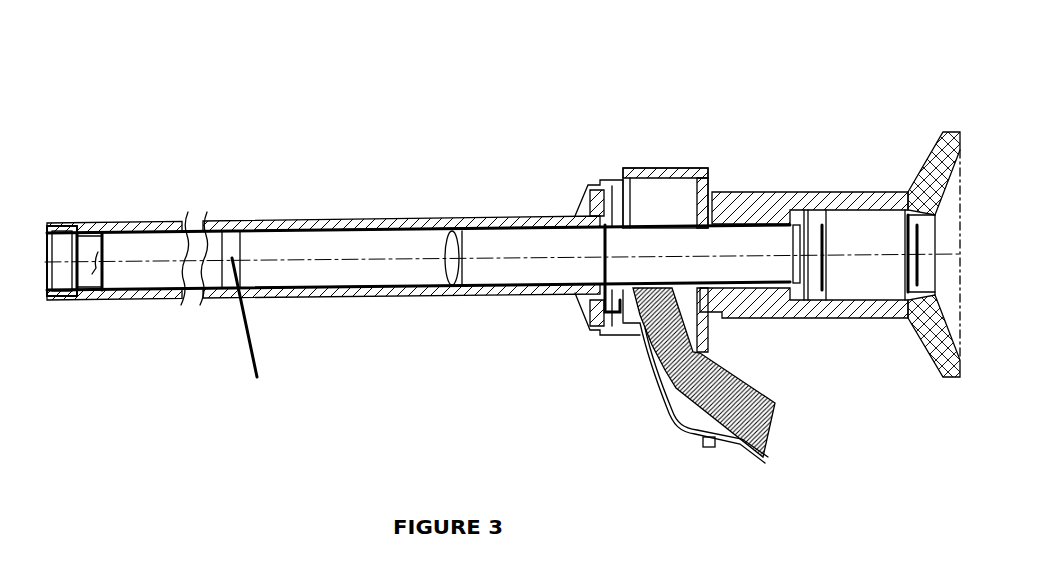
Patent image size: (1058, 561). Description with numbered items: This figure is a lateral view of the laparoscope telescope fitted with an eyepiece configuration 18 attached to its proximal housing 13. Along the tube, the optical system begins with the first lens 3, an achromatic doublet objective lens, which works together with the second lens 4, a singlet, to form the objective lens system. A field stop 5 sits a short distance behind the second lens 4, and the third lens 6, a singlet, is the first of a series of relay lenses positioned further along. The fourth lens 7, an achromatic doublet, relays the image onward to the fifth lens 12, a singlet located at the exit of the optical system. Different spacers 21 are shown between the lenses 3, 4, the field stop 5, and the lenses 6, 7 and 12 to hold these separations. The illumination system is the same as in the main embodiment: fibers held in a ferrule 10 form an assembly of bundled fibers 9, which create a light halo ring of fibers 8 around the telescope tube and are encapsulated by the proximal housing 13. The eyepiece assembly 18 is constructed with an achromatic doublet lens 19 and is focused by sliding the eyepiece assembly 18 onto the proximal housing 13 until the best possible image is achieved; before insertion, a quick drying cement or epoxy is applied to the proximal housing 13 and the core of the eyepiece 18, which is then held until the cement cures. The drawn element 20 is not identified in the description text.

The lens #1 3 is at (62, 273).
The lens #2 4 is at (90, 236).
The field stop 5 is at (105, 263).
The lens #3 6 is at (253, 283).
The lens #4 7 is at (440, 285).
The light halo ring of fibers 8 is at (603, 258).
The bundled fibers 9 is at (667, 378).
The ferrule 10 is at (718, 438).
The lens #5 12 is at (826, 275).
The proximal housing 13 is at (707, 170).
The eyepiece assembly 18 is at (815, 193).
The achromatic doublet lens 19 is at (925, 220).
The seal 20 is at (592, 216).
The spacers 21 is at (320, 220).